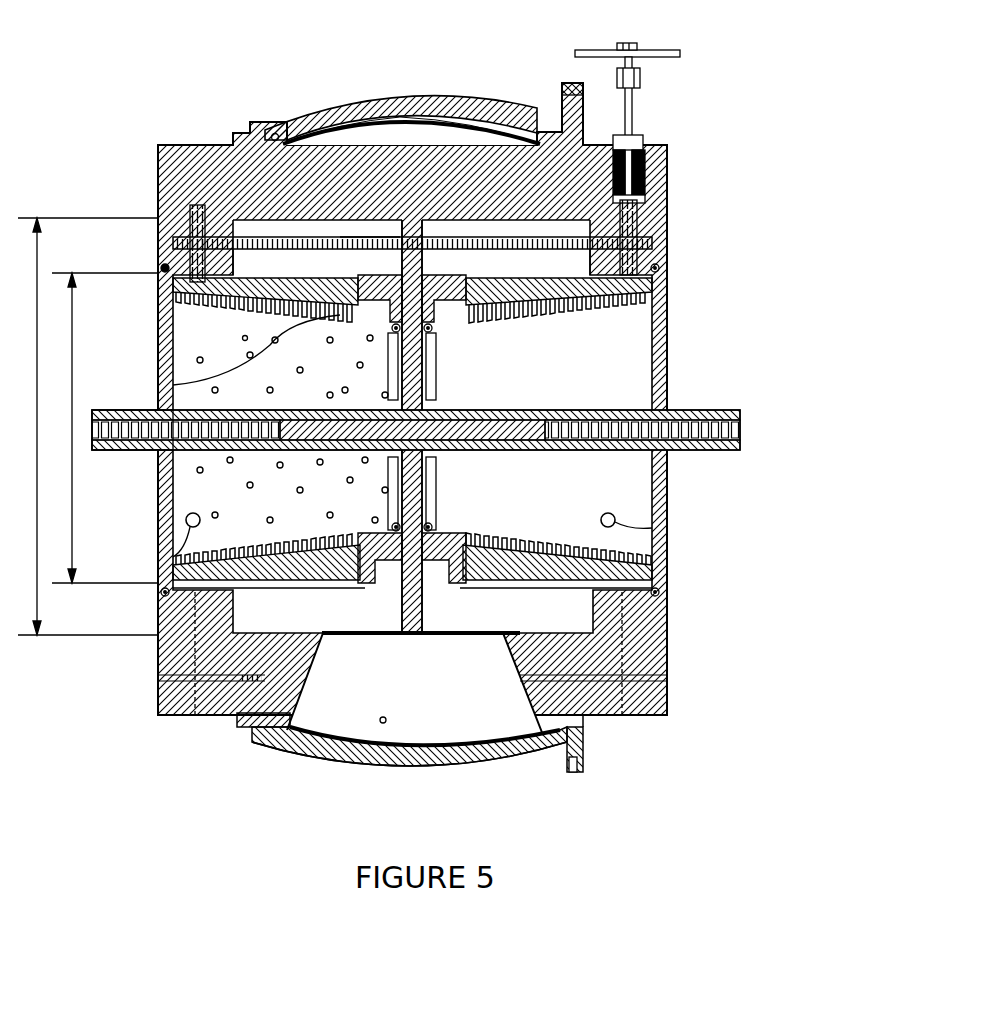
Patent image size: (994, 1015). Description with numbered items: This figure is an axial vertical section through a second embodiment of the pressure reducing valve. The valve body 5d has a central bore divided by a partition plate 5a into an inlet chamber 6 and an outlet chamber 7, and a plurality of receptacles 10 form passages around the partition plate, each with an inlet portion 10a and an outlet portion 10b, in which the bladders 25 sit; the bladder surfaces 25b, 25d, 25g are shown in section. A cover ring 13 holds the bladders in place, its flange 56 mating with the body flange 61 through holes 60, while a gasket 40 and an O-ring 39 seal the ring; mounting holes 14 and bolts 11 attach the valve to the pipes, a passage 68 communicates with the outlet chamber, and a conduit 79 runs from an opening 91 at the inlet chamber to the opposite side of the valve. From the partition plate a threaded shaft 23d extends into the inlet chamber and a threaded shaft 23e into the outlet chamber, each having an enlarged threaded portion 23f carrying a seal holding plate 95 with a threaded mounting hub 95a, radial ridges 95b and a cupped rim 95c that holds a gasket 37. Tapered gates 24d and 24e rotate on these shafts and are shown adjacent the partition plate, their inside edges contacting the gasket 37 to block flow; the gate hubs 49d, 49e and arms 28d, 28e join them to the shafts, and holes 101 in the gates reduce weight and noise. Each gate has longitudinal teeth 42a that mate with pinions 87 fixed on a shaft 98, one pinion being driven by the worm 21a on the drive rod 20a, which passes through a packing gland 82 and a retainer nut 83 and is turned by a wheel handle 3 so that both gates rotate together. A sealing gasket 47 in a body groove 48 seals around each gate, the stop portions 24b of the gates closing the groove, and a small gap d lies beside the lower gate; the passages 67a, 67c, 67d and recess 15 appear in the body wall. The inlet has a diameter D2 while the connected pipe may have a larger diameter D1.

The wheel handle 3 is at (648, 48).
The partition plate 5a is at (425, 633).
The valve body 5d is at (160, 150).
The inlet chamber 6 is at (247, 265).
The outlet chamber 7 is at (576, 250).
The flow control means receptacle 10 is at (362, 732).
The inlet portion 10a is at (323, 448).
The outlet portion 10b is at (452, 448).
The bolt 11 is at (667, 678).
The cover ring 13 is at (320, 105).
The mounting hole 14 is at (158, 683).
The recess 15 is at (530, 632).
The drive rod 20a is at (660, 96).
The worm 21a is at (645, 165).
The threaded shaft 23d is at (95, 470).
The threaded shaft 23e is at (740, 440).
The enlarged threaded portion 23f is at (432, 470).
The stop portion 24b is at (652, 578).
The gate 24d is at (175, 356).
The gate 24e is at (548, 312).
The bladder 25 is at (470, 128).
The window plate 25b is at (383, 638).
The window surface 25d is at (405, 130).
The window surface 25g is at (440, 128).
The left lower chamber 28d is at (180, 528).
The right lower chamber 28e is at (665, 470).
The gasket 37 is at (432, 517).
The O-ring 39 is at (262, 120).
The gasket 40 is at (578, 773).
The longitudinal teeth 42a is at (290, 258).
The sealing gasket 47 is at (657, 264).
The body groove 48 is at (660, 594).
The left upper chamber 49d is at (100, 383).
The right upper chamber 49e is at (685, 410).
The flange 56 is at (568, 745).
The mating hole 60 is at (556, 108).
The flange 61 is at (588, 752).
The passage 67a is at (195, 715).
The passage 67c is at (652, 528).
The passage 67d is at (173, 557).
The passage 68 is at (625, 715).
The conduit 79 is at (590, 150).
The packing gland 82 is at (642, 178).
The retainer nut 83 is at (642, 135).
The pinion 87 is at (640, 218).
The opening 91 is at (370, 203).
The seal holding plate 95 is at (436, 355).
The threaded mounting hub 95a is at (436, 385).
The radial ridge 95b is at (390, 380).
The cupped rim 95c is at (388, 350).
The shaft 98 is at (345, 249).
The holes 101 is at (245, 336).
The gap d is at (388, 562).
The pipe diameter D1 is at (88, 426).
The inlet diameter D2 is at (104, 428).